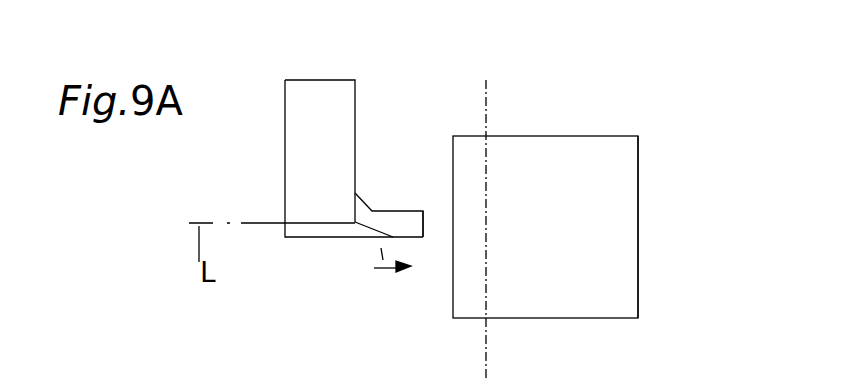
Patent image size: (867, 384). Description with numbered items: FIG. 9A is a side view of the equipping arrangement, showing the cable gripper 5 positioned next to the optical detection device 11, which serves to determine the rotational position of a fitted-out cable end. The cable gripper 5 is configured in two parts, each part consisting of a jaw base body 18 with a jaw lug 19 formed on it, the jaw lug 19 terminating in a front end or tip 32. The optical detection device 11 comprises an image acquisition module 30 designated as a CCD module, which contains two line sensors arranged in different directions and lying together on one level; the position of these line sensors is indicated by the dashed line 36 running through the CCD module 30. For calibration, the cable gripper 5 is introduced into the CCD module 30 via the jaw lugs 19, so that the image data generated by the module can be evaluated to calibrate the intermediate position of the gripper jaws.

The cable gripper 5 is at (333, 62).
The jaw base body 18 is at (305, 186).
The jaw lug 19 is at (403, 222).
The front end or tip 32 is at (425, 226).
The image acquisition module 30 is at (620, 258).
The optical detection device 11 is at (644, 117).
The dashed line 36 is at (488, 355).